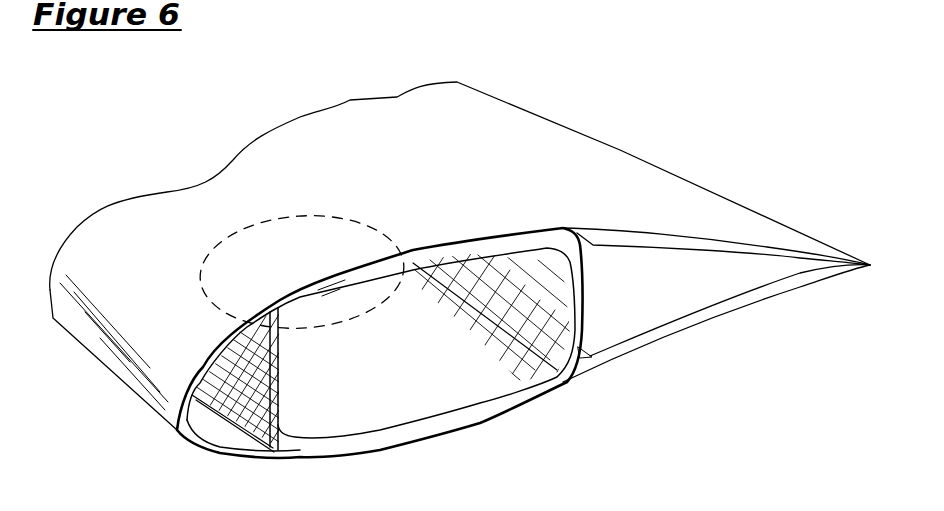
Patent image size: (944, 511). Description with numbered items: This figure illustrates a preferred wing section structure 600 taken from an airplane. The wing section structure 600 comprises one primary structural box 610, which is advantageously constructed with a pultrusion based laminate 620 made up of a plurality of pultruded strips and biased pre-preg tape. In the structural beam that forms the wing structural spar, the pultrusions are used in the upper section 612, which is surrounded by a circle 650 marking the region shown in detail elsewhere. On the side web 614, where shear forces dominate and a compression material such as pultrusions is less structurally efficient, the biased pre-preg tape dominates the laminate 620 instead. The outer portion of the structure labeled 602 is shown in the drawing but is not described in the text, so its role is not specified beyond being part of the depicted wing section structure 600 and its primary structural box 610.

The wing section structure 600 is at (180, 150).
The outer shell 602 is at (572, 232).
The primary structural box 610 is at (592, 306).
The upper section 612 is at (283, 293).
The side web 614 is at (280, 375).
The pultrusion based laminate 620 is at (352, 276).
The circle 650 is at (305, 217).